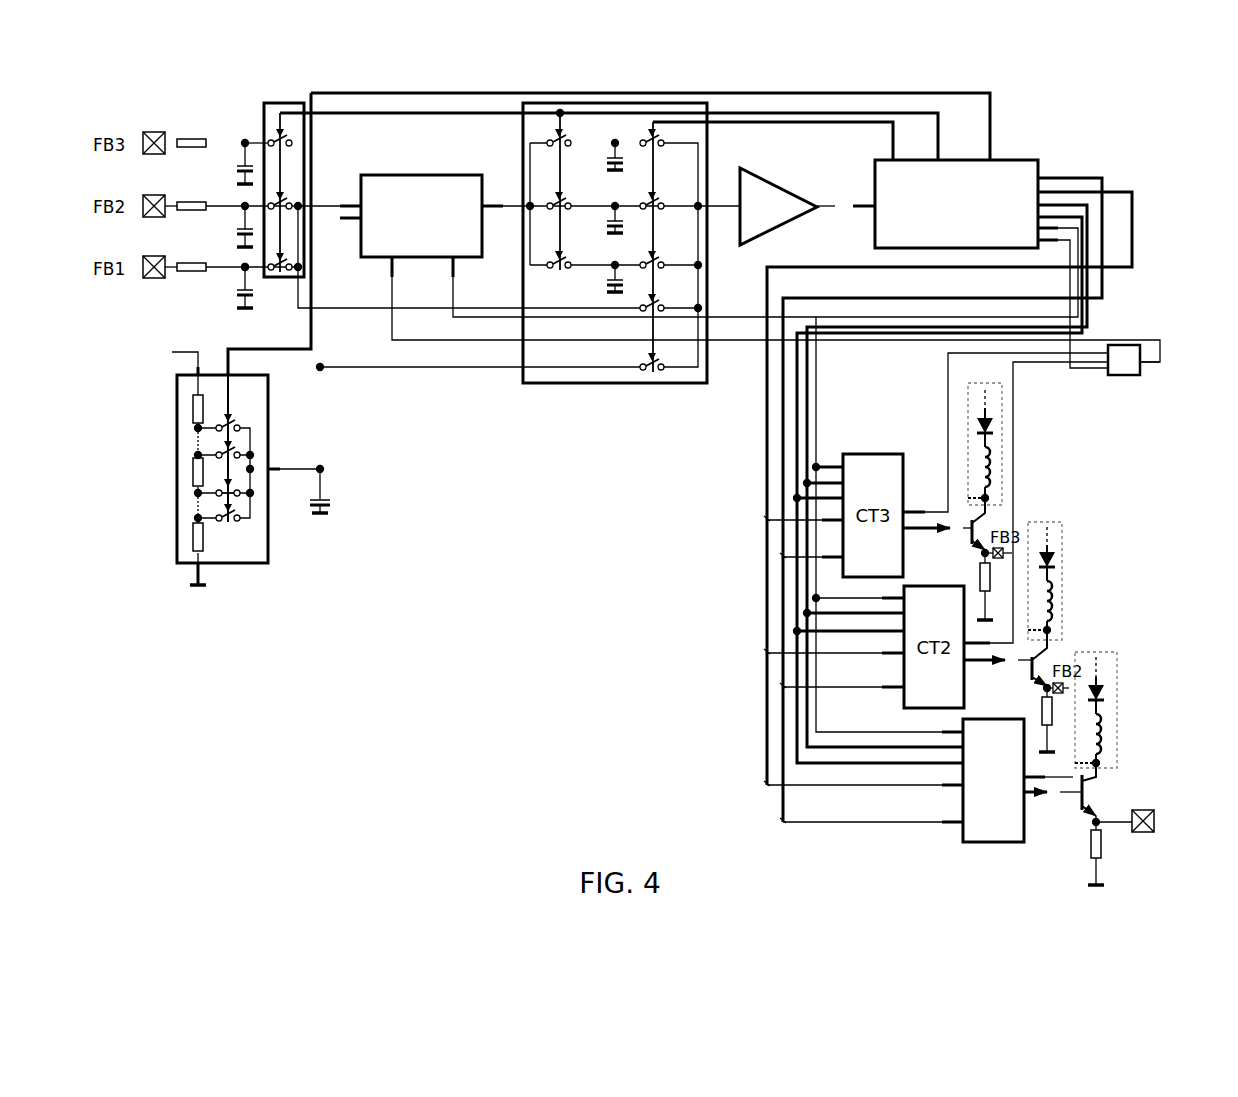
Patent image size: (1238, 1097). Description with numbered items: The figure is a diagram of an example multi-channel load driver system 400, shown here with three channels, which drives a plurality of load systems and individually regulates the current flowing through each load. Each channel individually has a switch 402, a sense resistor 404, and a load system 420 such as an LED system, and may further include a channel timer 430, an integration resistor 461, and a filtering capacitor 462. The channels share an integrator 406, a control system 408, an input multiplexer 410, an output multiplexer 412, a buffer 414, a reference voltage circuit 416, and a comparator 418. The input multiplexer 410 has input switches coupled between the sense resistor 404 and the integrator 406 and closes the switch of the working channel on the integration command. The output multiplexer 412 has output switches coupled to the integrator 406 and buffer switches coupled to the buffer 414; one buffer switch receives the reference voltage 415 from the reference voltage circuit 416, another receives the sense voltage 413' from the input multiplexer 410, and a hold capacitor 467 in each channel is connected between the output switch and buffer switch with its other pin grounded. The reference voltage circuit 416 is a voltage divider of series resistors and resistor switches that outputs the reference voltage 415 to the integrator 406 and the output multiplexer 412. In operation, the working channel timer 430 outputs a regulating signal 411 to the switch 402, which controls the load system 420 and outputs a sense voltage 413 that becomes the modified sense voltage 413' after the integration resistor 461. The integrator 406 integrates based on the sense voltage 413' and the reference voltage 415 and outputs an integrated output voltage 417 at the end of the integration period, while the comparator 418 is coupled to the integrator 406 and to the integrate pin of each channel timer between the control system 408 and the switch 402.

The multi-channel load driver system 400 is at (538, 74).
The input multiplexer 410 is at (280, 101).
The integrator 406 is at (388, 173).
The integrated output voltage 417 is at (512, 200).
The hold capacitor 467 is at (607, 287).
The output multiplexer 412 is at (605, 276).
The buffer 414 is at (782, 187).
The control system 408 is at (1027, 157).
The comparator 418 is at (1124, 379).
The modified sense voltage 413' is at (219, 250).
The integration resistor 461 is at (189, 273).
The filtering capacitor 462 is at (237, 291).
The reference voltage circuit 416 is at (175, 428).
The reference voltage 415 is at (323, 409).
The channel timer 430 is at (975, 846).
The regulating signal 411 is at (1050, 803).
The switch 402 is at (1093, 785).
The sense resistor 404 is at (1105, 846).
The sense voltage 413 is at (1164, 823).
The load system 420 is at (1118, 705).